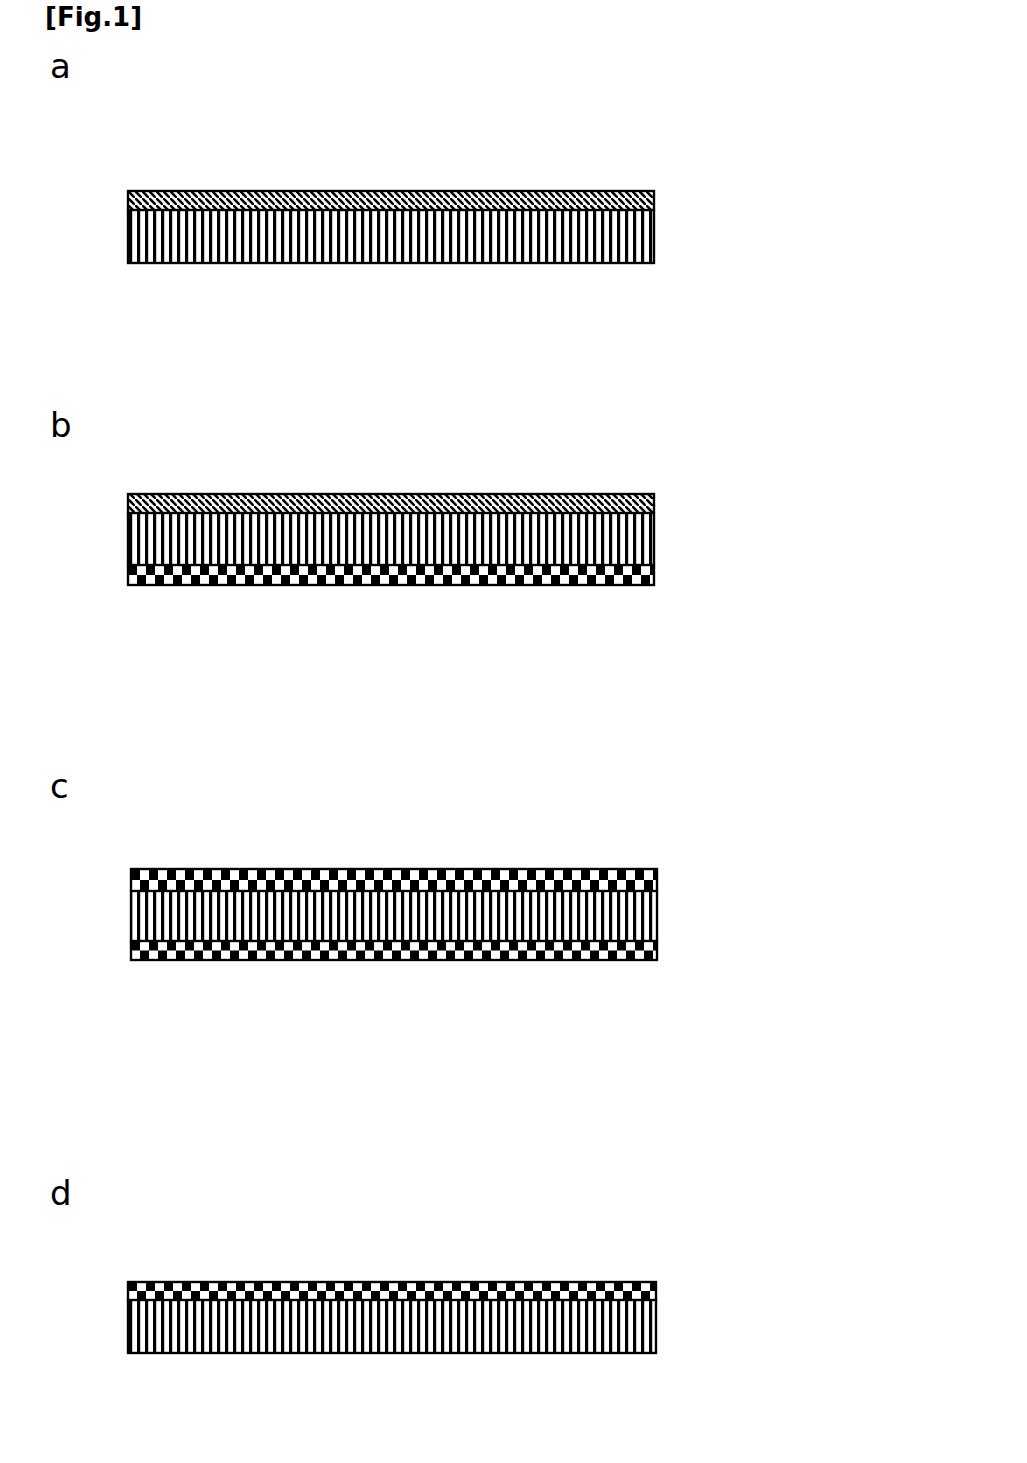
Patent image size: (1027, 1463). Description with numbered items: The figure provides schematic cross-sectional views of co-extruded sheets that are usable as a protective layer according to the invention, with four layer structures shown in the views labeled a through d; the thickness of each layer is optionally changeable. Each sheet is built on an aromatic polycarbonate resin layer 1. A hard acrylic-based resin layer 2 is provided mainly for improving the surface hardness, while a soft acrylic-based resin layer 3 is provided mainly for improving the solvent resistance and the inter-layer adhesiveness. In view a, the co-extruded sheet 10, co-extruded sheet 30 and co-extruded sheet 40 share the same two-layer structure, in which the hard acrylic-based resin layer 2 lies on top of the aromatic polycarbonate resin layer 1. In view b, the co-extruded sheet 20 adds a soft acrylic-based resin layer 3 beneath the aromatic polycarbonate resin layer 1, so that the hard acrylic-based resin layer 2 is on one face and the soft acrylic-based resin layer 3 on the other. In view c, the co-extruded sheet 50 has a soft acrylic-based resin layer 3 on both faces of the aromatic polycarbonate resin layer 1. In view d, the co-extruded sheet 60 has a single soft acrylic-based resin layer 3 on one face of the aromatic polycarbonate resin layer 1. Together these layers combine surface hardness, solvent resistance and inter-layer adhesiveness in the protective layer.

The aromatic polycarbonate resin layer 1 is at (656, 237).
The hard acrylic-based resin layer 2 is at (656, 201).
The soft acrylic-based resin layer 3 is at (657, 575).
The co-extruded sheet 10 is at (433, 135).
The co-extruded sheet 20 is at (512, 450).
The co-extruded sheet 30 is at (433, 135).
The co-extruded sheet 40 is at (527, 138).
The co-extruded sheet 50 is at (500, 825).
The co-extruded sheet 60 is at (510, 1233).